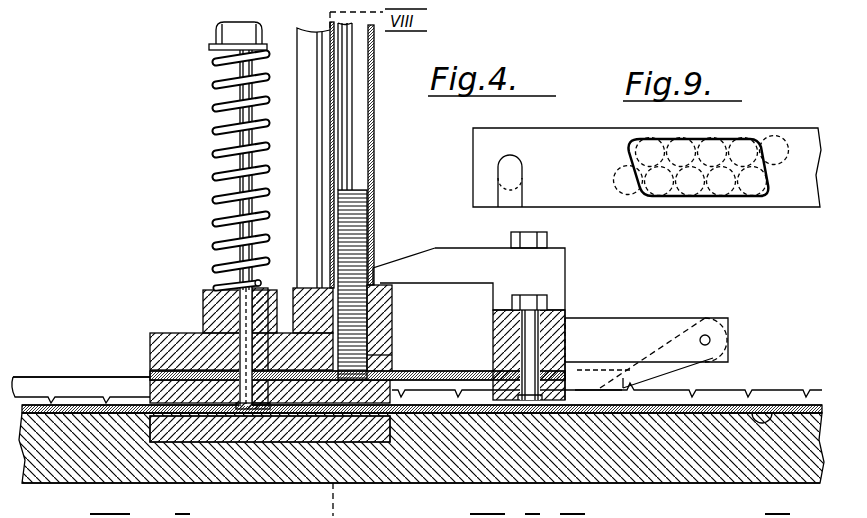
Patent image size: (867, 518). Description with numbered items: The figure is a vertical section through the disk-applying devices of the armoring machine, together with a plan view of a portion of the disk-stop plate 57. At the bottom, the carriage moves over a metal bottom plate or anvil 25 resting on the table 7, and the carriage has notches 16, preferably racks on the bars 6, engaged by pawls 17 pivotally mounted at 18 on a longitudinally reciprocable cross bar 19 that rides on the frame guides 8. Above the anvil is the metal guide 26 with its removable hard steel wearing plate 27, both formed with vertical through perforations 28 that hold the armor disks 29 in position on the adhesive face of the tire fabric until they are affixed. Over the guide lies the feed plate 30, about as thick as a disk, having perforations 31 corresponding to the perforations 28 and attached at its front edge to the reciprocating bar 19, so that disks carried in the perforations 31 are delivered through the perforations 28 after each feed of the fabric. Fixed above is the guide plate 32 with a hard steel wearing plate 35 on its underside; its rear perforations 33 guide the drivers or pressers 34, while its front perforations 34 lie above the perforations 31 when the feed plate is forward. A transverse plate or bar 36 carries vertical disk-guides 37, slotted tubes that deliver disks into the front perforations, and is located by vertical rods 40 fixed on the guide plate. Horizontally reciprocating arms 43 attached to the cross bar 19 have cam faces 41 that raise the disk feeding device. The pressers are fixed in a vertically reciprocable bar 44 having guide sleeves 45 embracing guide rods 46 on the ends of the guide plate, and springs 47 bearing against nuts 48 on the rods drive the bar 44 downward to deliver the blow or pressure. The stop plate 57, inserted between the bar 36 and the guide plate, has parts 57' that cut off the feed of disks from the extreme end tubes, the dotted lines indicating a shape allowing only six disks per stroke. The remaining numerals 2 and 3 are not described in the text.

In FIG. 4, the base member 2 is at (767, 413).
In FIG. 4, the plate layer 3 is at (725, 408).
In FIG. 4, the bars 6 is at (670, 398).
In FIG. 4, the table 7 is at (641, 462).
In FIG. 4, the frame guides 8 is at (720, 378).
In FIG. 4, the notches 16 is at (580, 385).
In FIG. 4, the pawls 17 is at (637, 372).
In FIG. 4, the pivot 18 is at (710, 338).
In FIG. 4, the cross bar 19 is at (557, 328).
In FIG. 4, the bottom plate or anvil 25 is at (297, 442).
In FIG. 4, the guide 26 is at (150, 378).
In FIG. 4, the wearing plate 27 is at (148, 340).
In FIG. 4, the perforations 28 is at (240, 347).
In FIG. 4, the armor disks 29 is at (357, 237).
In FIG. 4, the feed plate 30 is at (408, 378).
In FIG. 4, the perforations 31 is at (403, 364).
In FIG. 4, the guide plate 32 is at (387, 362).
In FIG. 4, the rear perforations 33 is at (222, 322).
In FIG. 4, the front perforations 34 is at (390, 338).
In FIG. 4, the wearing plate 35 is at (150, 392).
In FIG. 4, the plate or bar 36 is at (312, 288).
In FIG. 4, the disk-guides 37 is at (375, 153).
In FIG. 9, the vertical rods 40 is at (506, 178).
In FIG. 4, the cam faces 41 is at (400, 258).
In FIG. 4, the arms 43 is at (453, 260).
In FIG. 4, the reciprocable bar 44 is at (208, 290).
In FIG. 4, the guide sleeves 45 is at (225, 158).
In FIG. 4, the guide rods 46 is at (228, 60).
In FIG. 4, the springs 47 is at (220, 130).
In FIG. 4, the nuts 48 is at (228, 34).
In FIG. 9, the stop plate 57 is at (647, 153).
In FIG. 9, the cut-off parts 57' is at (700, 167).